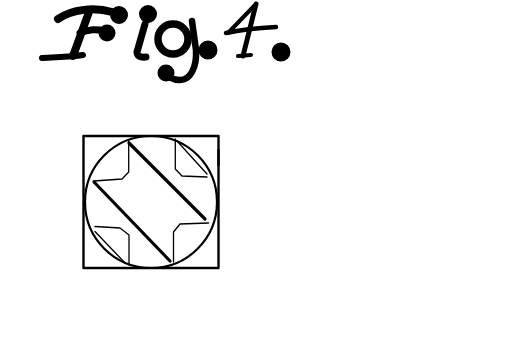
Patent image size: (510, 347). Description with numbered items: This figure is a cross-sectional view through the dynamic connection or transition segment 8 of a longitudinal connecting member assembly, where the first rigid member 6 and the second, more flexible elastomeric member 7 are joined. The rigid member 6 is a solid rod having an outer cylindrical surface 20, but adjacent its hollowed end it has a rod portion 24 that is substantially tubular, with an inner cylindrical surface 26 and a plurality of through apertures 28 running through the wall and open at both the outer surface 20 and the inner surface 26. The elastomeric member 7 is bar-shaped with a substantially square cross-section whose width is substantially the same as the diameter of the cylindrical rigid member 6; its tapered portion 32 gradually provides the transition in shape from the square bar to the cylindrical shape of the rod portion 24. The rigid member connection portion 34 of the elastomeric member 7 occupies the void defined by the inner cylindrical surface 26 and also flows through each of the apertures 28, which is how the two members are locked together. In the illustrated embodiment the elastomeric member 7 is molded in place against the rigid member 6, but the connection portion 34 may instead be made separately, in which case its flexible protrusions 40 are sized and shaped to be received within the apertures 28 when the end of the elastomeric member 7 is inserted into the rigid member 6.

The first rigid member 6 is at (100, 262).
The elastomeric member 7 is at (218, 157).
The transition portion or segment 8 is at (167, 274).
The outer cylindrical surface 20 is at (221, 237).
The rod portion 24 is at (114, 137).
The inner cylindrical surface 26 is at (193, 184).
The through apertures 28 is at (167, 137).
The tapered portion 32 is at (95, 137).
The rigid member connection portion 34 is at (93, 182).
The flexible protrusions 40 is at (140, 137).